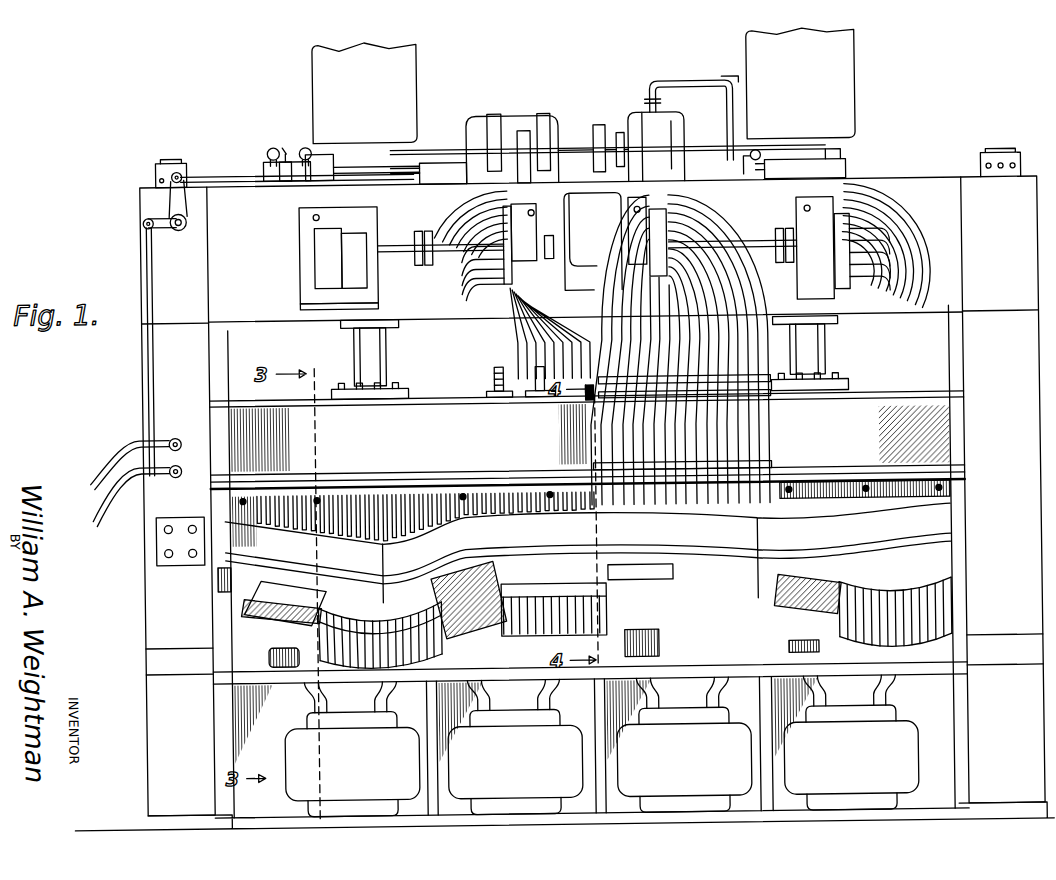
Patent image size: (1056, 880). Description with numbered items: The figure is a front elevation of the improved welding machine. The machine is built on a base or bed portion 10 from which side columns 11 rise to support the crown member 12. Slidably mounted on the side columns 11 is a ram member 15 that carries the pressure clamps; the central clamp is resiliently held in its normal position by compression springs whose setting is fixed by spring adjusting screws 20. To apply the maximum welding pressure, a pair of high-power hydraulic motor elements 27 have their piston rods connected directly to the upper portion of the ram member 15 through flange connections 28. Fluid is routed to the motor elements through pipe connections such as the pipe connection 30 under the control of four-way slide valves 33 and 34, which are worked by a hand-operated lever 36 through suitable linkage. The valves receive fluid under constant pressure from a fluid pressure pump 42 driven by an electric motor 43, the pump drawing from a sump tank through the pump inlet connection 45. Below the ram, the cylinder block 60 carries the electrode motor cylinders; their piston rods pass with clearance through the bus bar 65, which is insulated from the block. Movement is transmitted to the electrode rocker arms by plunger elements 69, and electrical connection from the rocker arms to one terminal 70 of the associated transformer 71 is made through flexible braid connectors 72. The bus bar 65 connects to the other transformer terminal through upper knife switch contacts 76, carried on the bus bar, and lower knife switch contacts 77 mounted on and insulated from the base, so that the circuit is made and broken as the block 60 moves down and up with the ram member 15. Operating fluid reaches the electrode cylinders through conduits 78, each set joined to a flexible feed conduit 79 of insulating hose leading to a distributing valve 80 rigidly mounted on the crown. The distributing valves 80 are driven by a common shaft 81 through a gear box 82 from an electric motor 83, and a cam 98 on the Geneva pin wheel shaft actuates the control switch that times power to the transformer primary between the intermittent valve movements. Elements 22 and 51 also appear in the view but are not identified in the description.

The base or bed portion 10 is at (146, 742).
The side columns 11 is at (147, 388).
The crown member 12 is at (941, 180).
The ram member 15 is at (888, 404).
The spring adjusting screws 20 is at (496, 378).
The clamp bracket 22 is at (548, 388).
The hydraulic motor elements 27 is at (340, 330).
The flange connections 28 is at (406, 392).
The pipe connection 30 is at (302, 148).
The control slide valve 33 is at (440, 160).
The control slide valve 34 is at (290, 150).
The hand-operated lever 36 is at (160, 222).
The fluid pressure pump 42 is at (670, 130).
The electric motor 43 is at (512, 125).
The pump inlet connection 45 is at (686, 88).
The valve 51 is at (270, 153).
The cylinder block 60 is at (948, 518).
The bus bar 65 is at (240, 588).
The plunger elements 69 is at (950, 570).
The terminal 70 is at (384, 706).
The transformer 71 is at (357, 769).
The flexible braid connectors 72 is at (950, 600).
The upper knife switch contacts 76 is at (362, 572).
The lower knife switch contacts 77 is at (265, 625).
The conduits 78 is at (768, 452).
The flexible feed conduit 79 is at (762, 334).
The distributing valve 80 is at (324, 238).
The common shaft 81 is at (462, 252).
The gear box 82 is at (607, 273).
The electric motor 83 is at (556, 132).
The cam 98 is at (440, 206).